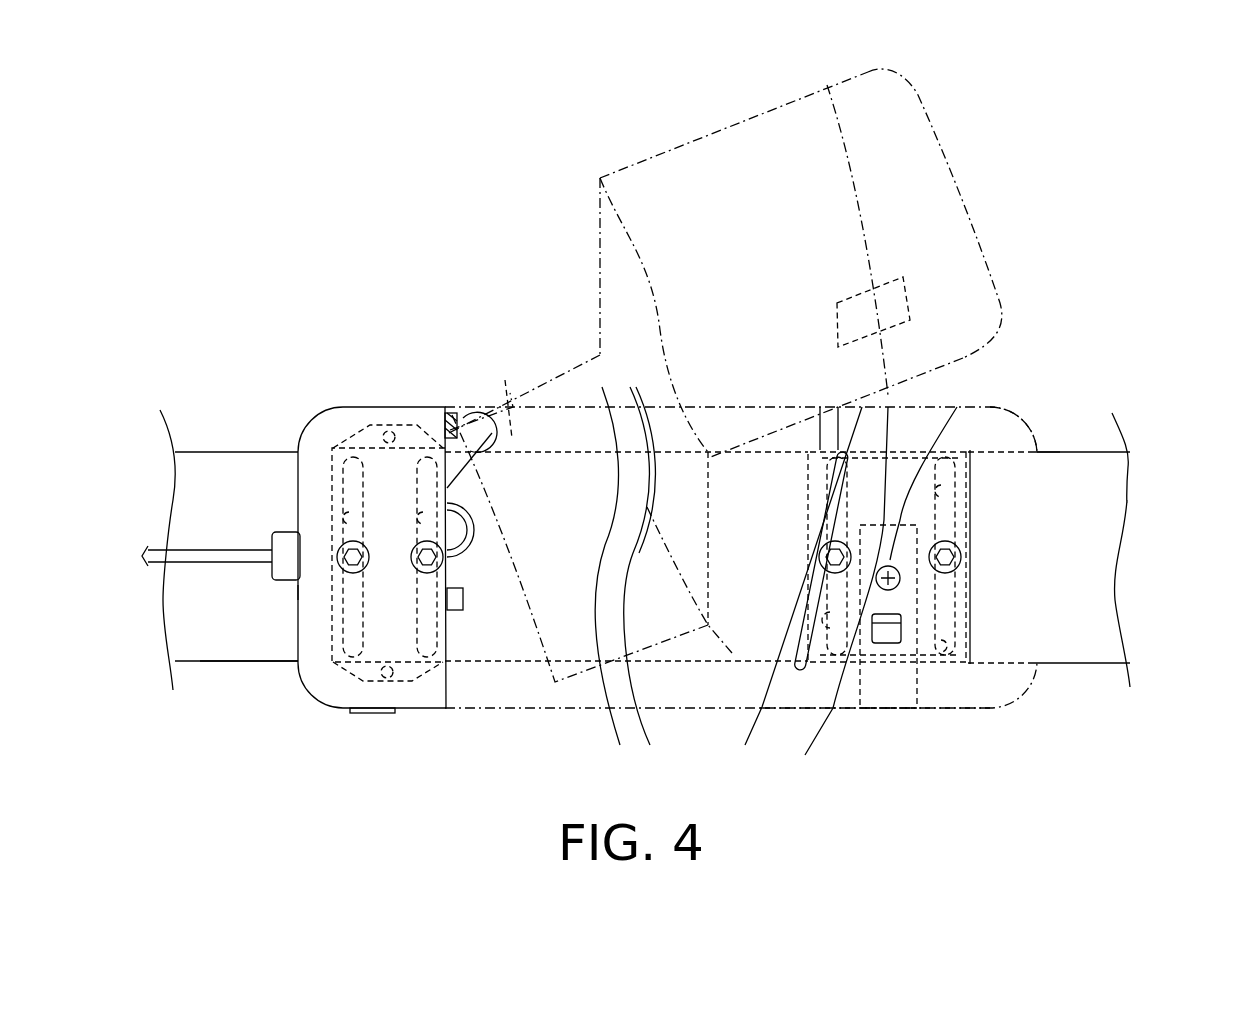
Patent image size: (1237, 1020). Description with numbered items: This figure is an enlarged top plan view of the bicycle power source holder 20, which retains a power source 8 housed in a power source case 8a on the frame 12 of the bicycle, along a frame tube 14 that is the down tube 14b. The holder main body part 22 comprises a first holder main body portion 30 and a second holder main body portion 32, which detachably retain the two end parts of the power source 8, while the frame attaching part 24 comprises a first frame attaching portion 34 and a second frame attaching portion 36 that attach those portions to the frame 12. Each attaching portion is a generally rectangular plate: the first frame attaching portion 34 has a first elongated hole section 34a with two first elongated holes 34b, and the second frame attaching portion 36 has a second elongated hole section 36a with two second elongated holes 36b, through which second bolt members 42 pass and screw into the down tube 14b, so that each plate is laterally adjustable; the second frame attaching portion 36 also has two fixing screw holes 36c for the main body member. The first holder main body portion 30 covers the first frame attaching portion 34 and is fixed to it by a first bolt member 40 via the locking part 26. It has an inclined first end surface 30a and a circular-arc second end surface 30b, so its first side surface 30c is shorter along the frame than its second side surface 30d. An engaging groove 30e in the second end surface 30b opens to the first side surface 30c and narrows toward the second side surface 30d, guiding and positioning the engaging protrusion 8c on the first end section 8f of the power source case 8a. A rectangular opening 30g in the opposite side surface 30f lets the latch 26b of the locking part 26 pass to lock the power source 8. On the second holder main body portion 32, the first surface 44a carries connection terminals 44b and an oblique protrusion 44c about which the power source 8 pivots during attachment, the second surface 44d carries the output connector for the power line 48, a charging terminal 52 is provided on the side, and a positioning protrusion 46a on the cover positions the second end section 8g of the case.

The power source 8 is at (600, 160).
The power source case 8a is at (680, 142).
The engaging protrusion 8c is at (908, 293).
The first end section 8f is at (900, 112).
The second end section 8g is at (517, 427).
The frame 12 is at (253, 673).
The frame tube 14 is at (207, 665).
The down tube 14b is at (222, 450).
The power source holder 20 is at (243, 277).
The holder main body part 22 is at (1043, 432).
The frame attaching part 24 is at (988, 410).
The locking part 26 is at (847, 698).
The latch 26b is at (917, 710).
The first holder main body portion 30 is at (1020, 500).
The first end surface 30a is at (1020, 543).
The second end surface 30b is at (866, 420).
The first side surface 30c is at (907, 430).
The second side surface 30d is at (877, 708).
The engaging groove 30e is at (822, 500).
The opposite side surface 30f is at (917, 647).
The rectangular opening 30g is at (970, 633).
The second holder main body portion 32 is at (353, 380).
The first frame attaching portion 34 is at (943, 672).
The first elongated hole section 34a is at (733, 483).
The first elongated hole 34b is at (790, 662).
The second frame attaching portion 36 is at (328, 410).
The second elongated hole section 36a is at (343, 482).
The second elongated hole 36b is at (420, 512).
The fixing screw hole 36c is at (377, 437).
The first bolt member 40 is at (960, 447).
The second bolt member 42 is at (348, 568).
The first surface 44a is at (447, 575).
The connection terminal 44b is at (463, 600).
The protrusion 44c is at (469, 422).
The second surface 44d is at (297, 592).
The positioning protrusion 46a is at (477, 532).
The power line 48 is at (243, 548).
The charging terminal 52 is at (373, 712).